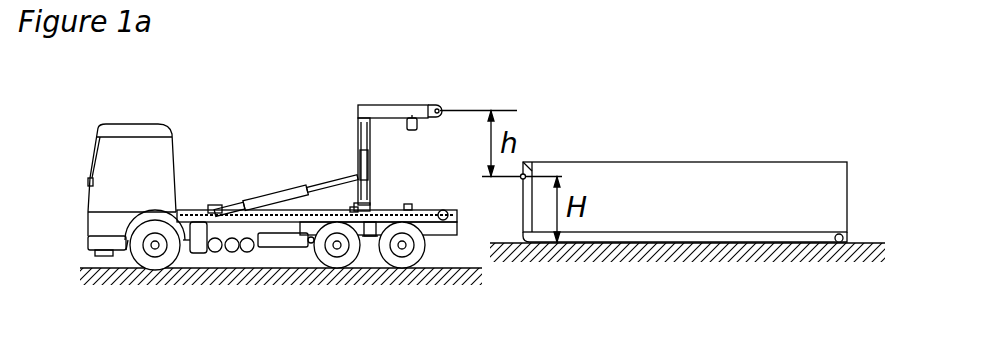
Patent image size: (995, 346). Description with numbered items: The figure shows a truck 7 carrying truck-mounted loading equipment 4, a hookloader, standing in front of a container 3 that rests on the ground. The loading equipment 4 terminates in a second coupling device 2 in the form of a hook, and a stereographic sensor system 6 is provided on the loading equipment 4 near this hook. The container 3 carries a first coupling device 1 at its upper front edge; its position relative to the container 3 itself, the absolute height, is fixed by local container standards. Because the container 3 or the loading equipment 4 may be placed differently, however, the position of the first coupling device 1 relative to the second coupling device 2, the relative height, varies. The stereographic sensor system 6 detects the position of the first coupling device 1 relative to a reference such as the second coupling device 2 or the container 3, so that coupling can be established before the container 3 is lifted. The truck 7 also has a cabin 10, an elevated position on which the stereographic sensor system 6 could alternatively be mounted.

The cabin 10 is at (153, 152).
The loading equipment 4 is at (323, 167).
The second coupling device 2 is at (432, 102).
The stereographic sensor system 6 is at (413, 131).
The truck 7 is at (258, 228).
The container 3 is at (725, 182).
The first coupling device 1 is at (521, 178).